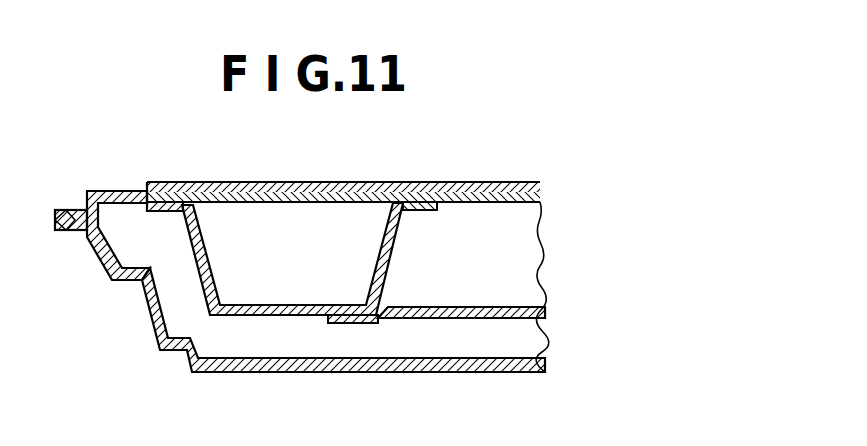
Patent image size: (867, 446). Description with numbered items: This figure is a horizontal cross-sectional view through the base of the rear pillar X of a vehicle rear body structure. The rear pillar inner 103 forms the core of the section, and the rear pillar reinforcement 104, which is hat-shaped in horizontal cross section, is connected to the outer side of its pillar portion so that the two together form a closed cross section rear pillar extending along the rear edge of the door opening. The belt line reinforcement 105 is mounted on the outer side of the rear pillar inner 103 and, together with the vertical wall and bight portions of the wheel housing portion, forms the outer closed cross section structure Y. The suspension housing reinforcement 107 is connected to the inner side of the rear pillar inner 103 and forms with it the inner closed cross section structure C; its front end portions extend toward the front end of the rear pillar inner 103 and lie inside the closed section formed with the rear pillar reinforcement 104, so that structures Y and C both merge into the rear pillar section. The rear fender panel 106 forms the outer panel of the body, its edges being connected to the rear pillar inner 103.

The rear pillar inner 103 is at (105, 192).
The rear pillar reinforcement 104 is at (382, 284).
The belt line reinforcement 105 is at (438, 318).
The rear fender panel 106 is at (217, 372).
The suspension housing reinforcement 107 is at (387, 192).
The rear pillar X is at (406, 246).
The closed cross section structure Y is at (518, 281).
The closed cross section structure C is at (482, 230).